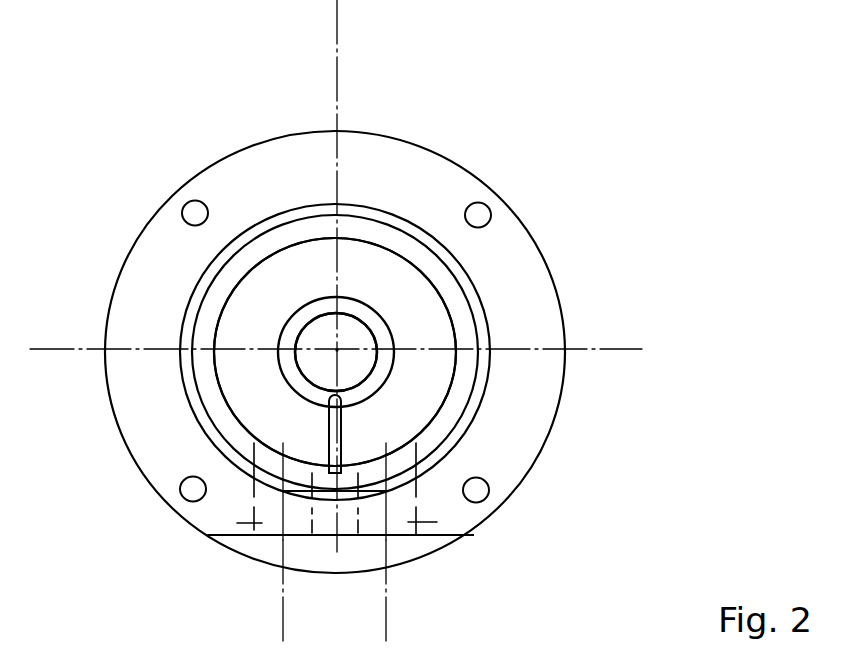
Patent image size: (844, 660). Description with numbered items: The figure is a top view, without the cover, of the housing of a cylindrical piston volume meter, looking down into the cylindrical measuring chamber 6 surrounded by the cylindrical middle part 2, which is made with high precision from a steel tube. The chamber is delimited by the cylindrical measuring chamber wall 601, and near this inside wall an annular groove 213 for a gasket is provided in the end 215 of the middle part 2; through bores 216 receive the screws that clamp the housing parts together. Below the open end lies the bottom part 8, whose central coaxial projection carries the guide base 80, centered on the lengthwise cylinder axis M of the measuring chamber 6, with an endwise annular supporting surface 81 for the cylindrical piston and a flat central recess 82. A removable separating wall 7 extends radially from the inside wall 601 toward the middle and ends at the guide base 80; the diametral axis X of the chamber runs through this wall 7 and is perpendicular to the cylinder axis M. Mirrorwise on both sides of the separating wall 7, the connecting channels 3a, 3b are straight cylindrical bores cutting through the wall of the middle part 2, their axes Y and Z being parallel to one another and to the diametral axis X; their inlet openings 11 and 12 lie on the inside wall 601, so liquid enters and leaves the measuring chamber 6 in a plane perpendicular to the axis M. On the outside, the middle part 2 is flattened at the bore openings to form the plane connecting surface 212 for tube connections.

The cylindrical middle part 2 is at (449, 159).
The measuring chamber 6 is at (418, 312).
The separating wall 7 is at (343, 428).
The bottom part 8 is at (253, 550).
The inlet opening 11 is at (258, 446).
The inlet opening 12 is at (418, 445).
The connecting channel 3a is at (258, 524).
The connecting channel 3b is at (422, 523).
The guide base 80 is at (280, 366).
The annular supporting surface 81 is at (280, 344).
The flat central recess 82 is at (310, 338).
The connecting surface 212 is at (438, 538).
The annular groove 213 is at (495, 330).
The end 215 is at (458, 187).
The through bore 216 is at (485, 215).
The cylindrical measuring chamber wall 601 is at (371, 243).
The lengthwise cylinder axis M is at (337, 350).
The diametral axis X is at (337, 32).
The bore axis Y is at (283, 602).
The bore axis Z is at (386, 602).